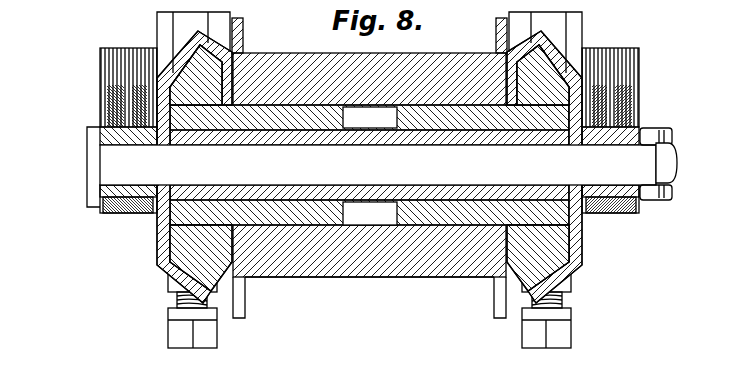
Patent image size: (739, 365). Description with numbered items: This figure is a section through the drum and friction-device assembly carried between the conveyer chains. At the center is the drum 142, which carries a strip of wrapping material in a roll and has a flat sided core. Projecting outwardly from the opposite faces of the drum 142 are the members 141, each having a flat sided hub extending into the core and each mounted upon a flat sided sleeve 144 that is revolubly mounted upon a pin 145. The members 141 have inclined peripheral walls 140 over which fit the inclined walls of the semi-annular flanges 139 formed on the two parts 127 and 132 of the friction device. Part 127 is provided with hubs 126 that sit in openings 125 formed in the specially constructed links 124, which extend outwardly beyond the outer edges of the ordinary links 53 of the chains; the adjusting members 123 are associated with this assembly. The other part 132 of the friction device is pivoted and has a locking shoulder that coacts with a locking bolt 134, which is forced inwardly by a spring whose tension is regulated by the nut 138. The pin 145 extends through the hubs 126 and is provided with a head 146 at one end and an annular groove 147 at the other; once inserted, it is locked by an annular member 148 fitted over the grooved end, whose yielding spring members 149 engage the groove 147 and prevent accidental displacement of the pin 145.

The links 53 is at (100, 59).
The adjusting members 123 is at (297, 107).
The links 124 is at (112, 110).
The openings 125 is at (128, 213).
The hubs 126 is at (100, 192).
The part of friction device 127 is at (173, 54).
The part of friction device 132 is at (158, 250).
The locking bolt 134 is at (177, 302).
The nut 138 is at (167, 287).
The semi-annular flanges 139 is at (195, 34).
The inclined peripheral walls 140 is at (226, 50).
The members 141 is at (246, 280).
The drum 142 is at (377, 262).
The flat sided sleeve 144 is at (494, 283).
The pin 145 is at (589, 175).
The head 146 is at (87, 153).
The annular groove 147 is at (671, 163).
The annular member 148 is at (646, 129).
The yielding spring members 149 is at (671, 142).